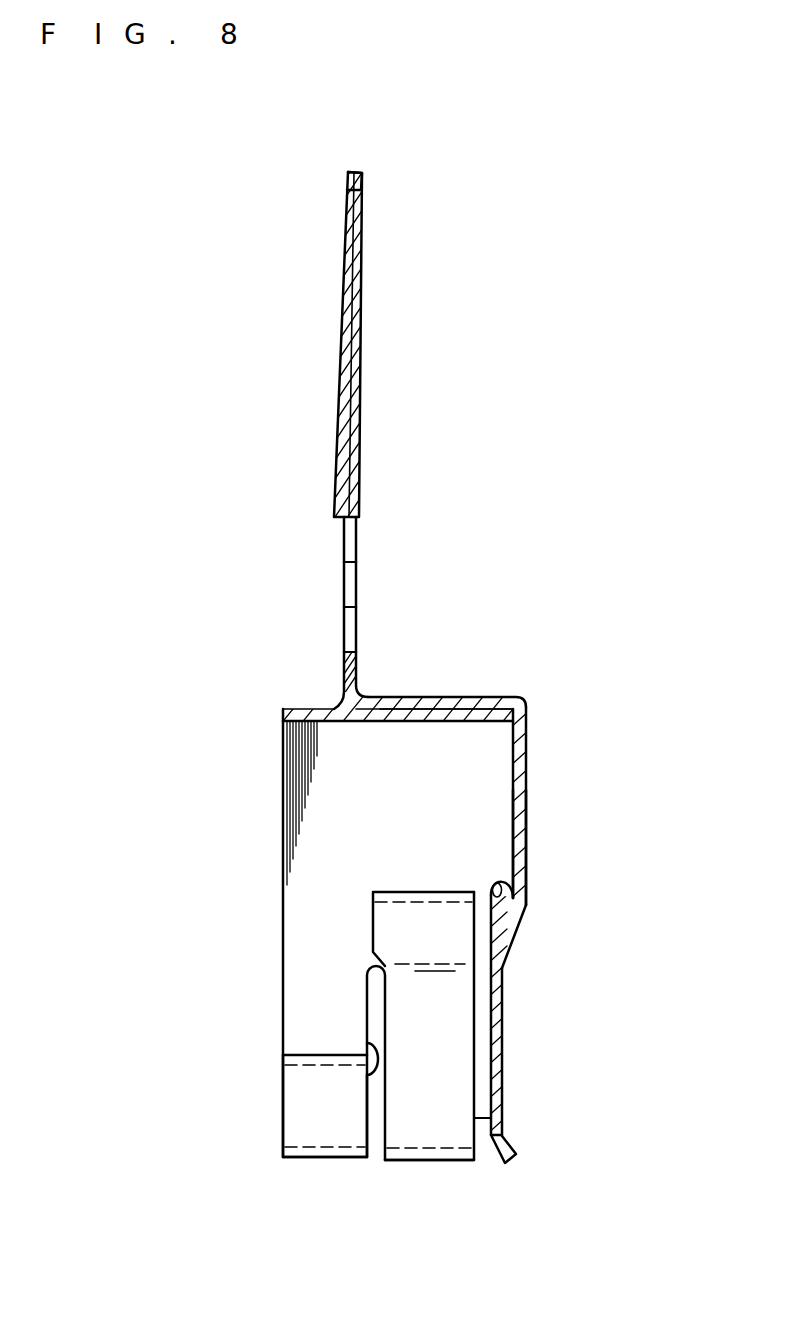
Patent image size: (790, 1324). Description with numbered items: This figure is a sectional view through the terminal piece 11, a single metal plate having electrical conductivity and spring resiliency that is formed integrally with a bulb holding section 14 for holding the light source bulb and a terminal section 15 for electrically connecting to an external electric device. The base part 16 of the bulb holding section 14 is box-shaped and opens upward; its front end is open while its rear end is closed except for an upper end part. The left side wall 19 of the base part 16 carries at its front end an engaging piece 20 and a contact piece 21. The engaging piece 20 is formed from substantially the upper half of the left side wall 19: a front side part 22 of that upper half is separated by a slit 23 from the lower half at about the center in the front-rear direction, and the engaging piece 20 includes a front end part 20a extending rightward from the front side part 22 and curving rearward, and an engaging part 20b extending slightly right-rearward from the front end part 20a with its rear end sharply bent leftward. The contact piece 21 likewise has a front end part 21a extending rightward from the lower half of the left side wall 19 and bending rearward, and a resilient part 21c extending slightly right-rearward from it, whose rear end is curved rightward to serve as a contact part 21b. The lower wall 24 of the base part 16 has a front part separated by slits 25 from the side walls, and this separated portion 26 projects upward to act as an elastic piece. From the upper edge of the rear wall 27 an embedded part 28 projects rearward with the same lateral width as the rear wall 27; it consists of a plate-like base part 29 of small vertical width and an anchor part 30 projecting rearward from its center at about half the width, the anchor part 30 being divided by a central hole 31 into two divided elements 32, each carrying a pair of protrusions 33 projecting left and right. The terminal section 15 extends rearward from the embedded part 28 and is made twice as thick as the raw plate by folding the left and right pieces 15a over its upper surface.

The terminal piece 11 is at (337, 355).
The bulb holding section 14 is at (527, 745).
The terminal section 15 is at (362, 310).
The left and right pieces 15a is at (345, 257).
The base part 16 is at (497, 697).
The left side wall 19 is at (310, 795).
The engaging piece 20 is at (293, 1112).
The front end part 20a is at (320, 1158).
The engaging part 20b is at (330, 1055).
The contact piece 21 is at (453, 1048).
The front end part 21a is at (428, 1160).
The contact part 21b is at (462, 932).
The resilient part 21c is at (445, 1017).
The front side part 22 is at (293, 1018).
The slit 23 is at (368, 1072).
The lower wall 24 is at (518, 840).
The slits 25 is at (488, 882).
The separated portion 26 is at (498, 1075).
The rear wall 27 is at (440, 705).
The embedded part 28 is at (342, 676).
The base part 29 is at (353, 660).
The anchor part 30 is at (345, 552).
The hole 31 is at (343, 627).
The divided elements 32 is at (352, 540).
The protrusions 33 is at (352, 583).